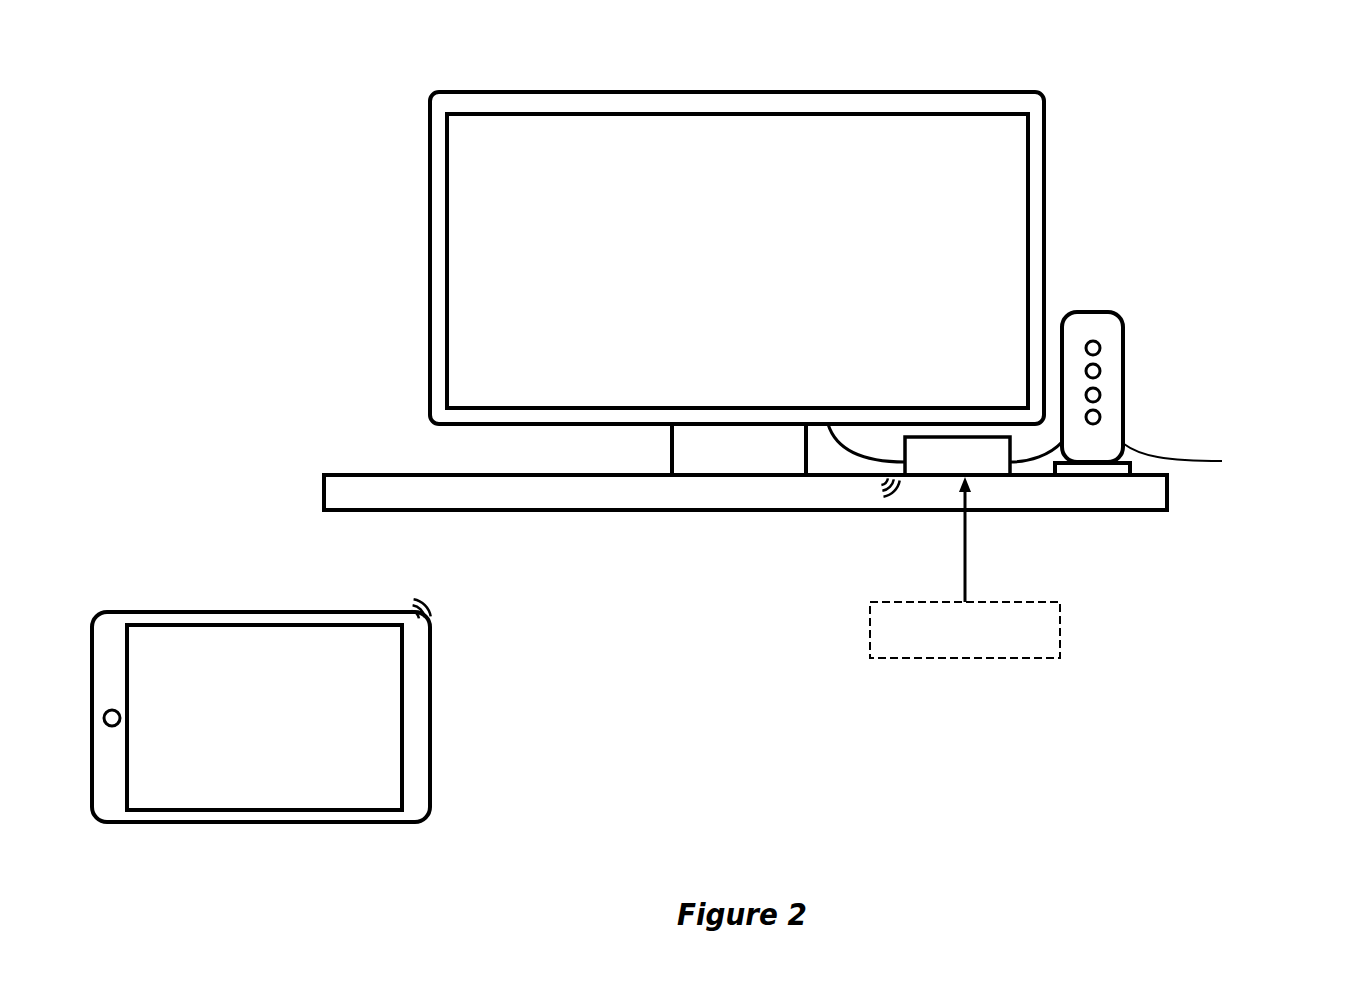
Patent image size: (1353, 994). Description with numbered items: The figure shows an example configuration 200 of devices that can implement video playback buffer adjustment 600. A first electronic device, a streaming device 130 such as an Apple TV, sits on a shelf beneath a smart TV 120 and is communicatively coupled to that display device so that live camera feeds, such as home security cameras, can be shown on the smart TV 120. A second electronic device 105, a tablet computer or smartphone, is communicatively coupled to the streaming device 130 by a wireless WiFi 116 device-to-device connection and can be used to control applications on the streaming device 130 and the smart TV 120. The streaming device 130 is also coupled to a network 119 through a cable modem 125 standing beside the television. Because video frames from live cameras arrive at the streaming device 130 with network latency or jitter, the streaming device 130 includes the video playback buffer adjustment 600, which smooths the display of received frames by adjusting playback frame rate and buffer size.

The example configuration 200 is at (203, 39).
The smart TV 120 is at (797, 271).
The streaming device 130 is at (973, 467).
The cable modem 125 is at (1088, 310).
The network 119 is at (1235, 458).
The WiFi network 116 is at (887, 505).
The second electronic device 105 is at (312, 736).
The video playback buffer adjustment 600 is at (1025, 650).